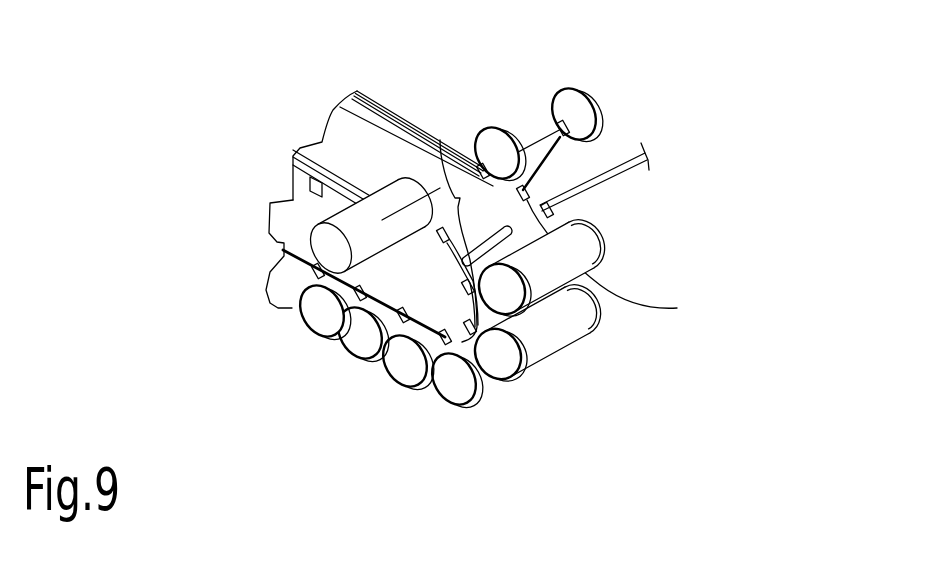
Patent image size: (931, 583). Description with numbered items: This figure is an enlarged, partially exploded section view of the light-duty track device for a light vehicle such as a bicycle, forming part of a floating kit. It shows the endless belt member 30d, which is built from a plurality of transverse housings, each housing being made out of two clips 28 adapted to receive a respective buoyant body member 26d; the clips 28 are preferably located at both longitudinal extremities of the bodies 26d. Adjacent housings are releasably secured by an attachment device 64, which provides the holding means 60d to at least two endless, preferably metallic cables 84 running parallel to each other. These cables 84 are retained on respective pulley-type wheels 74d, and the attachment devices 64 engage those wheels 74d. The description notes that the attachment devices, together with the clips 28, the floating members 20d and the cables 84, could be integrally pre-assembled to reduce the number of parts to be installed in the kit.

The floating members 20d is at (408, 388).
The buoyant body members 26d is at (288, 292).
The clips 28 is at (503, 122).
The endless belt member 30d is at (545, 436).
The holding means 60d is at (511, 216).
The attachment device 64 is at (317, 273).
The pulley-type wheels 74d is at (438, 157).
The endless cables 84 is at (377, 110).